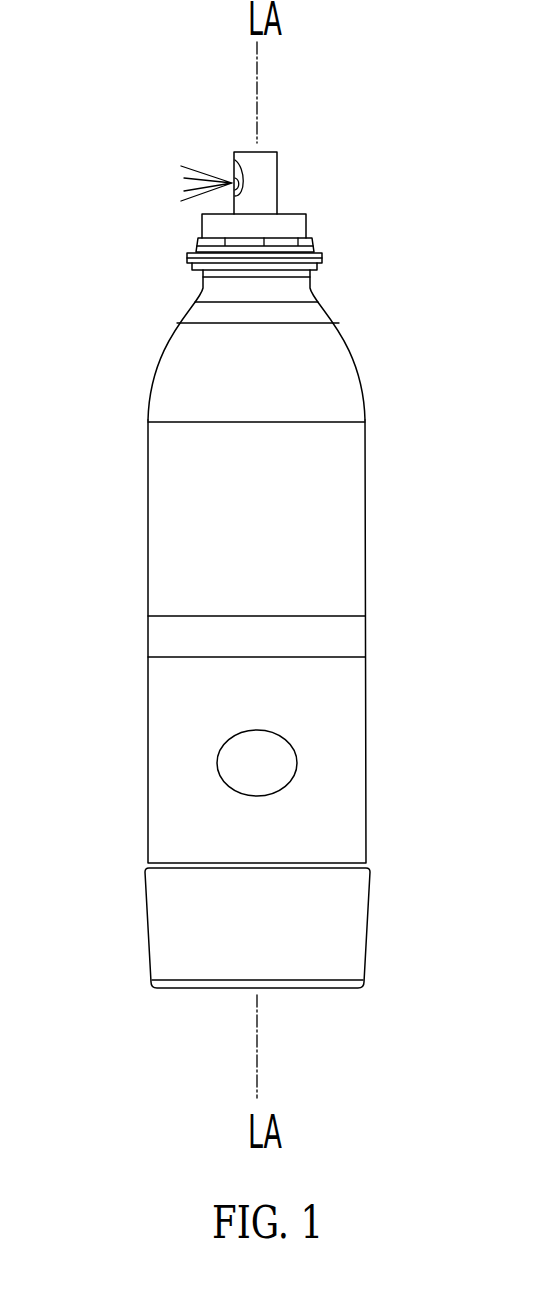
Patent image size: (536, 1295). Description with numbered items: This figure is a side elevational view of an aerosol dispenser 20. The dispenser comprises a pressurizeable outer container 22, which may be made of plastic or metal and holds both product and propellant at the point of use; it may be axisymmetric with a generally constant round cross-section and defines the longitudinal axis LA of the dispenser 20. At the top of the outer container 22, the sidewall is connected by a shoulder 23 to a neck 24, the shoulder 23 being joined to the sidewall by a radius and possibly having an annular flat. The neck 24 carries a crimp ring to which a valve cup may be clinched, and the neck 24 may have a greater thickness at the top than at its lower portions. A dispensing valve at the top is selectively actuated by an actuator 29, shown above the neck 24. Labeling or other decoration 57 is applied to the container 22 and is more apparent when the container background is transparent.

The aerosol dispenser 20 is at (128, 449).
The outer container 22 is at (157, 728).
The shoulder 23 is at (345, 333).
The neck 24 is at (170, 236).
The actuator 29 is at (258, 200).
The decoration 57 is at (267, 651).